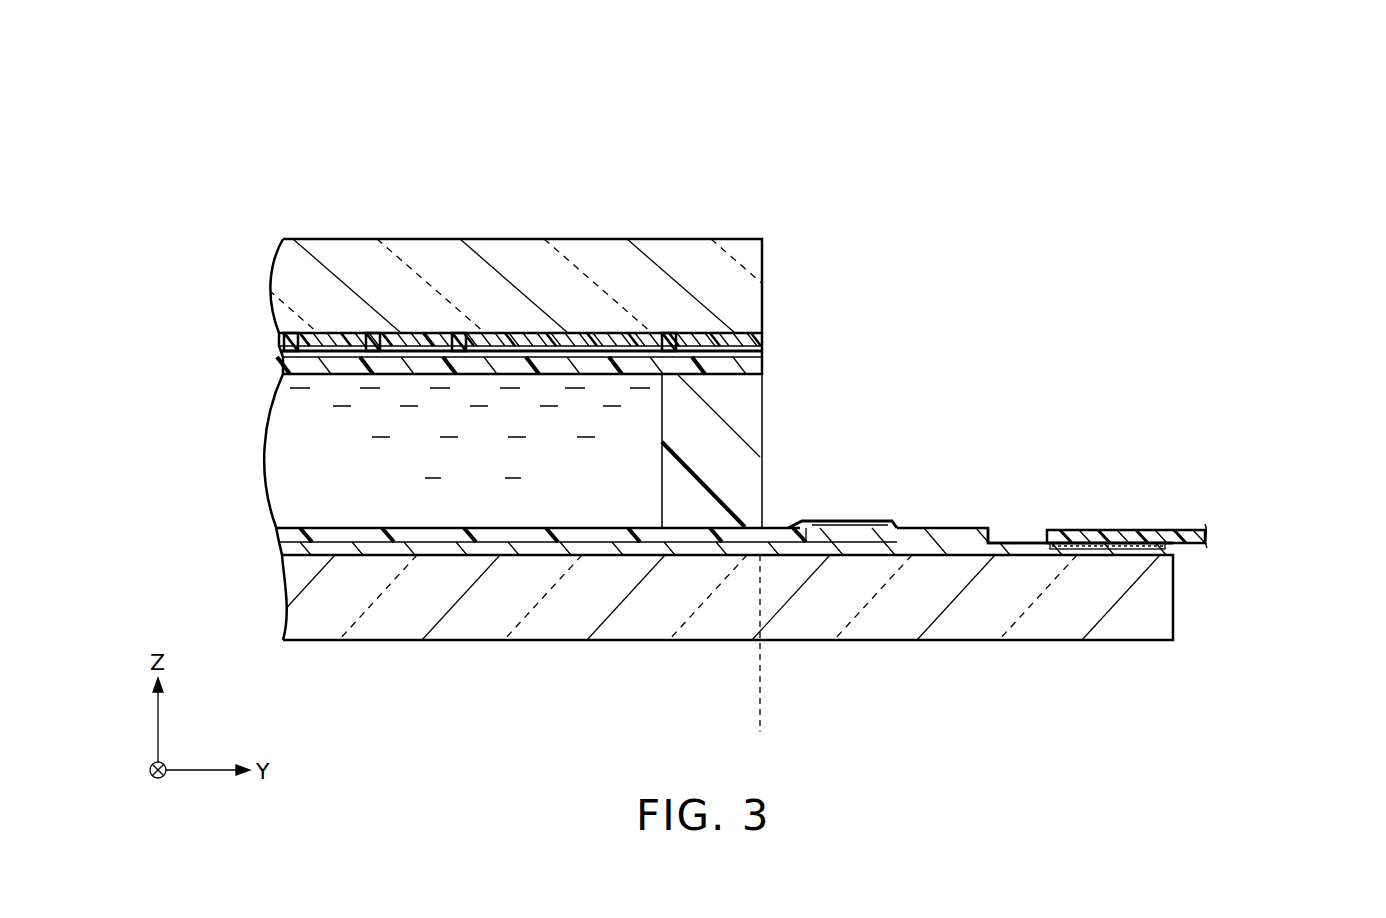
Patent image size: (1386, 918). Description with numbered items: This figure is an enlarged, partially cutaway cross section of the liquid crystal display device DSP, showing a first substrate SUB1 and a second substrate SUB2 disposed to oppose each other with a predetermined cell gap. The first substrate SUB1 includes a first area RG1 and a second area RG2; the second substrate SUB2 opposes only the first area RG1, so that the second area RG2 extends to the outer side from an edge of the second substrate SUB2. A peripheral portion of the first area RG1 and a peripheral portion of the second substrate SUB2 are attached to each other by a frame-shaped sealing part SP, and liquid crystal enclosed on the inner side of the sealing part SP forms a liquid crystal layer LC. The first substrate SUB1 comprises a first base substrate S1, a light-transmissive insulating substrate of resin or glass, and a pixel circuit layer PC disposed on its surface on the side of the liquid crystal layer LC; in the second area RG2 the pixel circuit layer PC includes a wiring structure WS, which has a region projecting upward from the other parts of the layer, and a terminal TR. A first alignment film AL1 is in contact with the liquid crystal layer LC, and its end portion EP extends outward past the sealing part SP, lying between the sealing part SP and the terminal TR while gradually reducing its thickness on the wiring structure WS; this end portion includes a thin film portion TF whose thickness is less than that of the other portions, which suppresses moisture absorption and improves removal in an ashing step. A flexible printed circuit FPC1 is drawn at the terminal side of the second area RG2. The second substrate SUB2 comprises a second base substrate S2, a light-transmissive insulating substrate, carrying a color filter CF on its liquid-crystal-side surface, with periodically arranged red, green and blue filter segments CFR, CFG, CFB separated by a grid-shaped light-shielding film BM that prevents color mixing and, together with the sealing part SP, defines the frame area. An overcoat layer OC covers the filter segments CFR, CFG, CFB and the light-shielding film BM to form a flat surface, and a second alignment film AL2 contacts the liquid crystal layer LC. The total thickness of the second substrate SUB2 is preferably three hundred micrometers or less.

The liquid crystal display device DSP is at (1037, 243).
The second substrate SUB2 is at (783, 320).
The first substrate SUB1 is at (1249, 570).
The second base substrate S2 is at (278, 298).
The first base substrate S1 is at (284, 607).
The color filter CF is at (535, 135).
The blue filter segment CFB is at (334, 346).
The green filter segment CFG is at (418, 346).
The red filter segment CFR is at (497, 346).
The light-shielding film BM is at (290, 334).
The overcoat layer OC is at (283, 357).
The second alignment film AL2 is at (295, 370).
The first alignment film AL1 is at (280, 532).
The liquid crystal layer LC is at (268, 450).
The sealing part SP is at (762, 408).
The pixel circuit layer PC is at (282, 552).
The thin film portion TF is at (822, 521).
The end portion of the first alignment film EP is at (866, 507).
The wiring structure WS is at (970, 538).
The terminal TR is at (1138, 548).
The flexible printed circuit FPC1 is at (1168, 530).
The first area RG1 is at (760, 716).
The second area RG2 is at (760, 716).